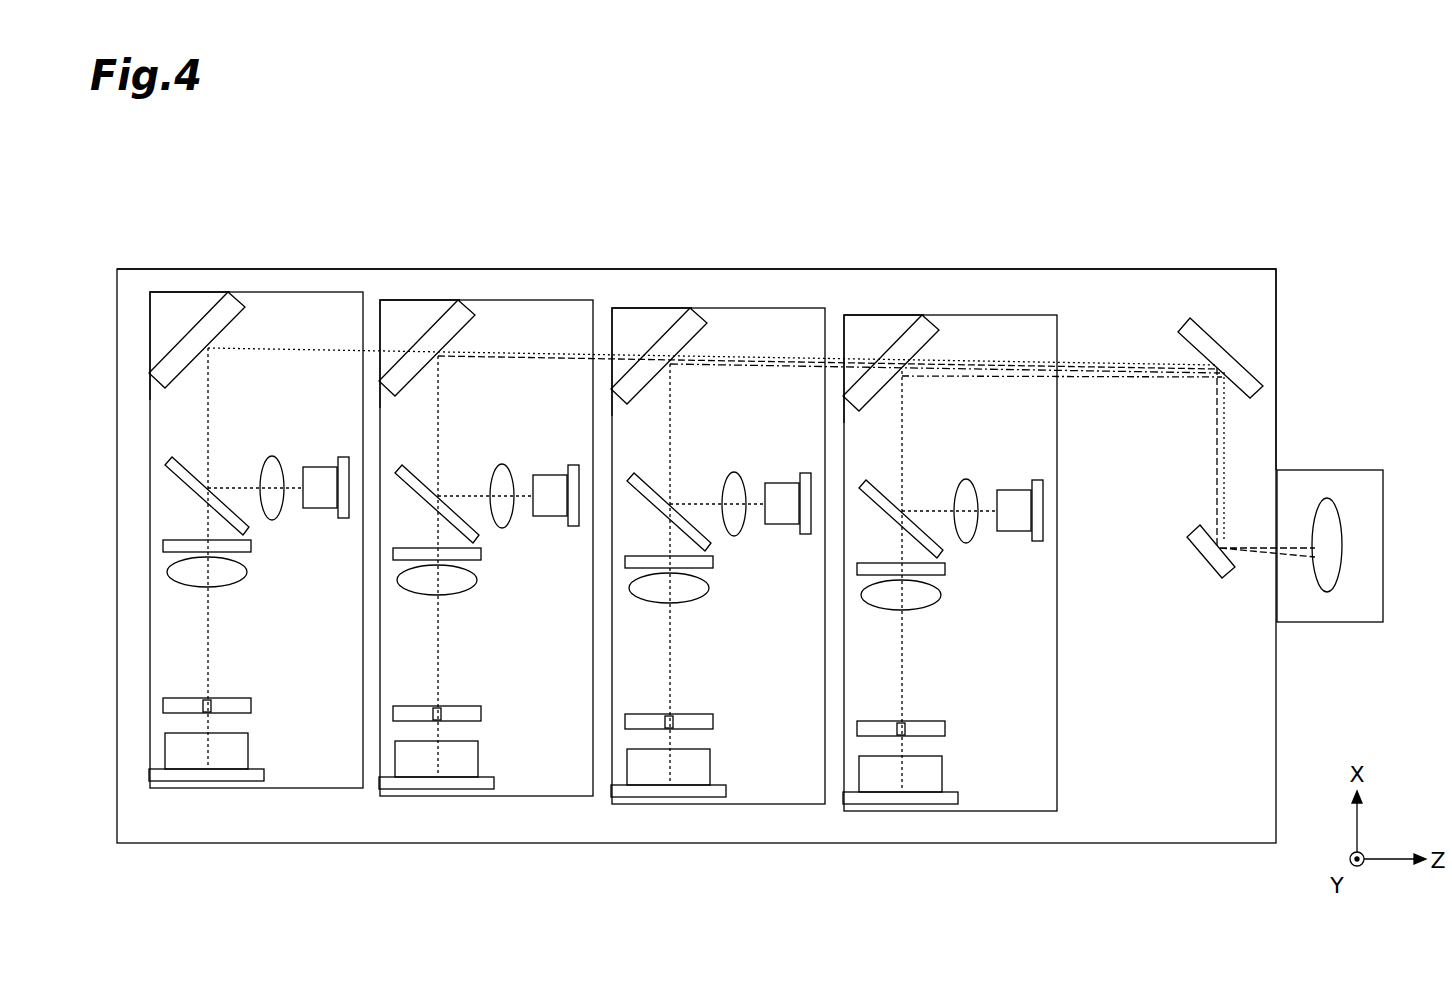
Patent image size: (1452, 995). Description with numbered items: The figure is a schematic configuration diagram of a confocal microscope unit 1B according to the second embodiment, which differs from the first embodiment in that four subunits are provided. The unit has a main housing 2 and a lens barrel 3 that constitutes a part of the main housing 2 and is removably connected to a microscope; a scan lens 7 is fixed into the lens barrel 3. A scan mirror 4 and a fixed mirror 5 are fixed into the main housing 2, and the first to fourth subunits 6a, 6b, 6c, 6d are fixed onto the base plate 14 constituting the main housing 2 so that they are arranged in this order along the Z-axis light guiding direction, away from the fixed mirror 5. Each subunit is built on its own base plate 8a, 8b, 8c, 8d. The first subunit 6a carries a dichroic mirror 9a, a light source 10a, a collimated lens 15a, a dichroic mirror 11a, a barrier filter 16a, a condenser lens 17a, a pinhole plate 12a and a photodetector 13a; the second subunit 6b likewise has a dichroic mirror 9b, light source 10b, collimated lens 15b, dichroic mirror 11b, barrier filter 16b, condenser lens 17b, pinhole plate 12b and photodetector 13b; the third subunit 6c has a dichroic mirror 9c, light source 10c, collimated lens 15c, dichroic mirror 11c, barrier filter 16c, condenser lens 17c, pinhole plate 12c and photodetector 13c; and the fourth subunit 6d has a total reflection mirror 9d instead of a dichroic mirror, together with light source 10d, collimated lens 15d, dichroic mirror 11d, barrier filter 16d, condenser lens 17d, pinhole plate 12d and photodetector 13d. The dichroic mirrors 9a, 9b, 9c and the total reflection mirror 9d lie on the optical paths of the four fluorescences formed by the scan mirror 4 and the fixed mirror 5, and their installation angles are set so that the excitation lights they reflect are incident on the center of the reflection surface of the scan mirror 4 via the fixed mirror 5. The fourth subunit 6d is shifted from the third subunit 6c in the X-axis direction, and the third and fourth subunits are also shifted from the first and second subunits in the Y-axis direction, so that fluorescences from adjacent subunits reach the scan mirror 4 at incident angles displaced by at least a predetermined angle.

The confocal microscope unit 1B is at (1276, 269).
The main housing 2 is at (1153, 268).
The lens barrel 3 is at (1350, 470).
The scan mirror 4 is at (1208, 575).
The fixed mirror 5 is at (1212, 318).
The scan lens 7 is at (1325, 592).
The base plate 14 is at (1264, 318).
The first subunit 6a is at (950, 611).
The second subunit 6b is at (718, 608).
The third subunit 6c is at (486, 604).
The fourth subunit 6d is at (330, 788).
The base plate 8a is at (884, 316).
The base plate 8b is at (652, 312).
The base plate 8c is at (420, 308).
The base plate 8d is at (172, 305).
The dichroic mirror 9a is at (891, 291).
The dichroic mirror 9b is at (659, 287).
The dichroic mirror 9c is at (427, 283).
The total reflection mirror 9d is at (217, 310).
The light source 10a is at (1026, 375).
The light source 10b is at (794, 371).
The light source 10c is at (562, 367).
The light source 10d is at (320, 462).
The dichroic mirror 11a is at (928, 383).
The dichroic mirror 11b is at (696, 380).
The dichroic mirror 11c is at (464, 376).
The dichroic mirror 11d is at (227, 498).
The pinhole plate 12a is at (901, 835).
The pinhole plate 12b is at (669, 832).
The pinhole plate 12c is at (437, 828).
The pinhole plate 12d is at (225, 710).
The photodetector 13a is at (900, 850).
The photodetector 13b is at (668, 846).
The photodetector 13c is at (436, 842).
The photodetector 13d is at (178, 776).
The collimated lens 15a is at (983, 357).
The collimated lens 15b is at (751, 353).
The collimated lens 15c is at (519, 349).
The collimated lens 15d is at (267, 447).
The barrier filter 16a is at (935, 756).
The barrier filter 16b is at (703, 753).
The barrier filter 16c is at (470, 749).
The barrier filter 16d is at (251, 545).
The condenser lens 17a is at (917, 744).
The condenser lens 17b is at (685, 740).
The condenser lens 17c is at (452, 736).
The condenser lens 17d is at (237, 583).